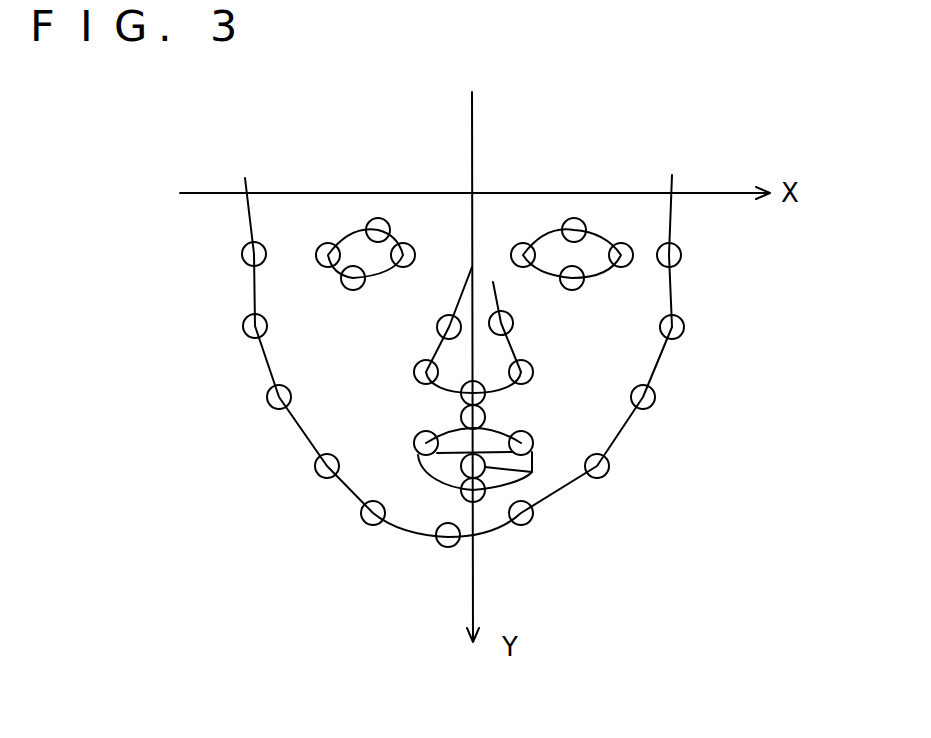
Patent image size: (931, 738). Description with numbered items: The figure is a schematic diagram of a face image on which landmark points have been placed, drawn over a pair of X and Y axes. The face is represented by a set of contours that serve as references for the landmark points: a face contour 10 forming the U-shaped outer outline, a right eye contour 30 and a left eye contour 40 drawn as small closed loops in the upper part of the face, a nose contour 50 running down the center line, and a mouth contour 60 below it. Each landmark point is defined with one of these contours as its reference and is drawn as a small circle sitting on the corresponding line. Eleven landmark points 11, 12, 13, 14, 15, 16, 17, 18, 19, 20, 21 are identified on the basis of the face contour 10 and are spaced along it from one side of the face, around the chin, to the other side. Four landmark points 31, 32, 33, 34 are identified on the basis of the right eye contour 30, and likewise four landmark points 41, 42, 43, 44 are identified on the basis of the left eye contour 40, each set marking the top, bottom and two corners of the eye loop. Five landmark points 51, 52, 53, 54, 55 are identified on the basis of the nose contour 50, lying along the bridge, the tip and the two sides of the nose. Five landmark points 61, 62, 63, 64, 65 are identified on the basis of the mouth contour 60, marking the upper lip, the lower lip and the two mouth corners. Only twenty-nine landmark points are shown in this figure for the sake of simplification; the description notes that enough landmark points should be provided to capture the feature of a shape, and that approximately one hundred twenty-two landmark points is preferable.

The face contour 10 is at (672, 187).
The landmark point 11 is at (681, 252).
The landmark point 12 is at (684, 328).
The landmark point 13 is at (656, 400).
The landmark point 14 is at (608, 471).
The landmark point 15 is at (528, 523).
The landmark point 16 is at (445, 548).
The landmark point 17 is at (364, 526).
The landmark point 18 is at (318, 477).
The landmark point 19 is at (268, 400).
The landmark point 20 is at (243, 327).
The landmark point 21 is at (242, 255).
The right eye contour 30 is at (352, 232).
The landmark point 31 is at (385, 222).
The landmark point 32 is at (415, 248).
The landmark point 33 is at (357, 293).
The landmark point 34 is at (322, 245).
The left eye contour 40 is at (545, 228).
The landmark point 41 is at (580, 222).
The landmark point 42 is at (627, 245).
The landmark point 43 is at (580, 289).
The landmark point 44 is at (515, 247).
The nose contour 50 is at (497, 292).
The landmark point 51 is at (513, 325).
The landmark point 52 is at (534, 370).
The landmark point 53 is at (465, 382).
The landmark point 54 is at (422, 362).
The landmark point 55 is at (445, 315).
The mouth contour 60 is at (500, 427).
The landmark point 61 is at (458, 418).
The landmark point 62 is at (532, 437).
The landmark point 63 is at (533, 472).
The landmark point 64 is at (462, 492).
The landmark point 65 is at (414, 443).